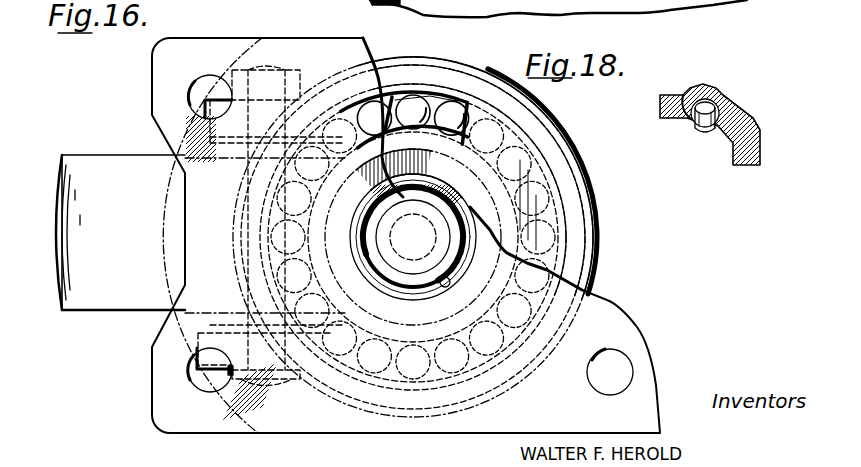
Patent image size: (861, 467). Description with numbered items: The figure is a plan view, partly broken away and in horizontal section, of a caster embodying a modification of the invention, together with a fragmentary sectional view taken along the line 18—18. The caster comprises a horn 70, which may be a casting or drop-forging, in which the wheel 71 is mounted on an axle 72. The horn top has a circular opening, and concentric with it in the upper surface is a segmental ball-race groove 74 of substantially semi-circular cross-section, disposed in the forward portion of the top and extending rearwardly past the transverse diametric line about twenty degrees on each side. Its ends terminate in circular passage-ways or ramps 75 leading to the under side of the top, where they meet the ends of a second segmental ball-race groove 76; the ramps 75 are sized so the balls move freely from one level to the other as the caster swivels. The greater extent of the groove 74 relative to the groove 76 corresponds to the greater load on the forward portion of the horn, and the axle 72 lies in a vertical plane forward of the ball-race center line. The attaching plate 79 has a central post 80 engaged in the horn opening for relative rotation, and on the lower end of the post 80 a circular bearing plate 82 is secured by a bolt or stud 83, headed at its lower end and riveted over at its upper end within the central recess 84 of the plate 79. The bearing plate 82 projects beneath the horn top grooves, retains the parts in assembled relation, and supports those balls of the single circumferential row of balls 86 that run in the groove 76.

In FIG. 16, the attaching plate 79 is at (218, 47).
In FIG. 16, the horn 70 is at (175, 210).
In FIG. 18, the horn 70 is at (747, 135).
In FIG. 16, the wheel 71 is at (107, 305).
In FIG. 16, the axle 72 is at (281, 385).
In FIG. 16, the segmental ball-race groove 74 is at (393, 97).
In FIG. 18, the segmental ball-race groove 74 is at (706, 110).
In FIG. 16, the passage-ways or ramps 75 is at (462, 110).
In FIG. 18, the passage-ways or ramps 75 is at (709, 132).
In FIG. 16, the segmental ball-race groove 76 is at (547, 160).
In FIG. 18, the segmental ball-race groove 76 is at (692, 124).
In FIG. 16, the central post 80 is at (448, 192).
In FIG. 16, the circular bearing plate 82 is at (552, 187).
In FIG. 16, the bolt or stud 83 is at (400, 244).
In FIG. 16, the central recess 84 is at (447, 287).
In FIG. 16, the balls 86 is at (418, 104).
In FIG. 16, the line 18— 18 is at (467, 150).